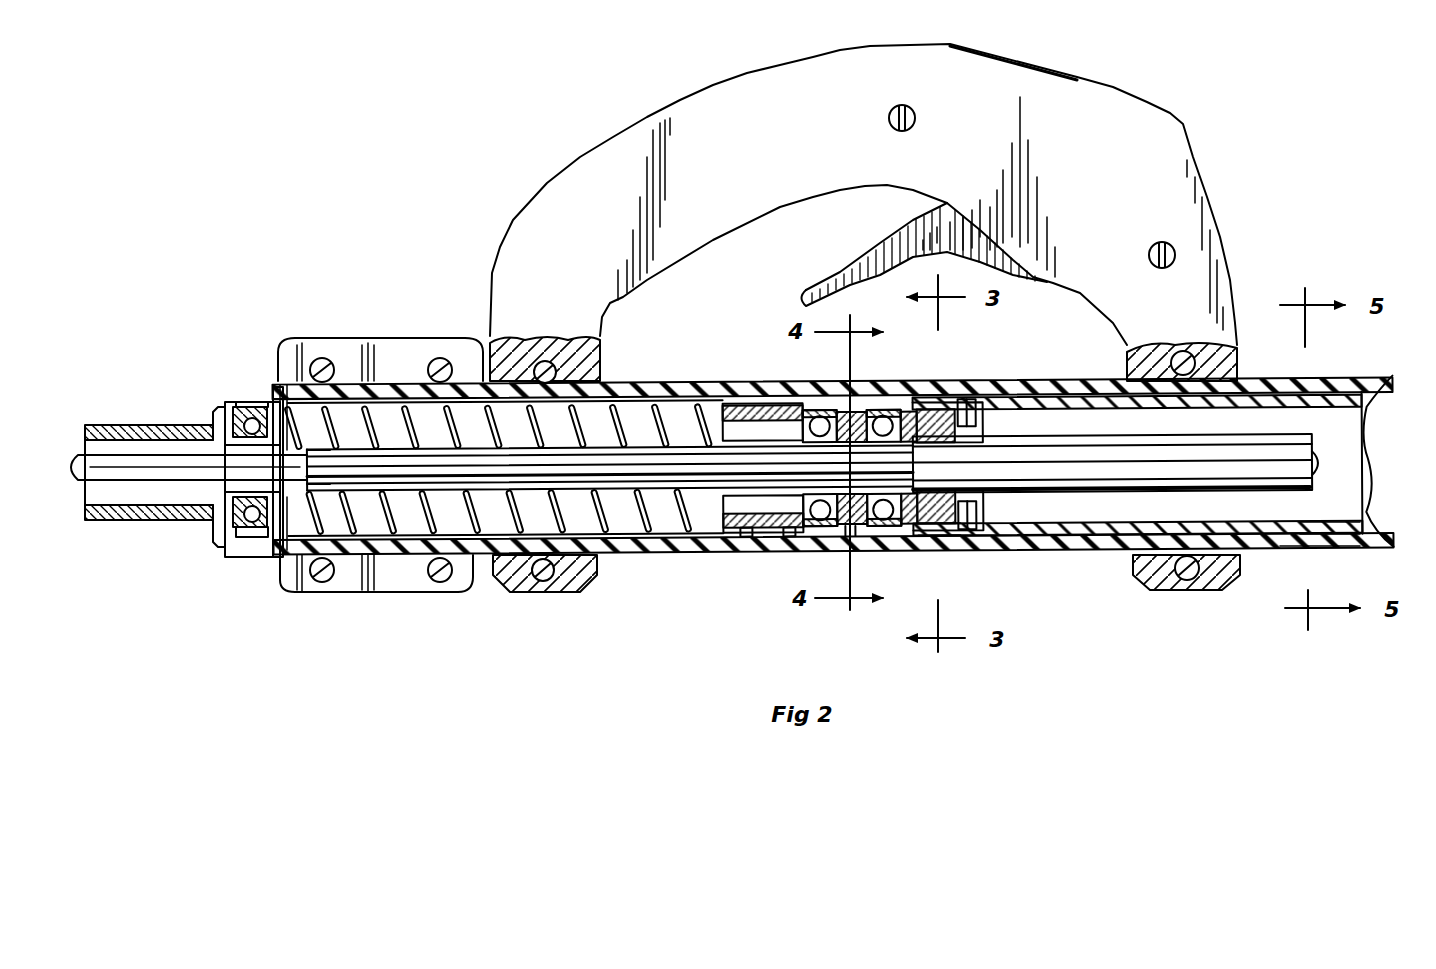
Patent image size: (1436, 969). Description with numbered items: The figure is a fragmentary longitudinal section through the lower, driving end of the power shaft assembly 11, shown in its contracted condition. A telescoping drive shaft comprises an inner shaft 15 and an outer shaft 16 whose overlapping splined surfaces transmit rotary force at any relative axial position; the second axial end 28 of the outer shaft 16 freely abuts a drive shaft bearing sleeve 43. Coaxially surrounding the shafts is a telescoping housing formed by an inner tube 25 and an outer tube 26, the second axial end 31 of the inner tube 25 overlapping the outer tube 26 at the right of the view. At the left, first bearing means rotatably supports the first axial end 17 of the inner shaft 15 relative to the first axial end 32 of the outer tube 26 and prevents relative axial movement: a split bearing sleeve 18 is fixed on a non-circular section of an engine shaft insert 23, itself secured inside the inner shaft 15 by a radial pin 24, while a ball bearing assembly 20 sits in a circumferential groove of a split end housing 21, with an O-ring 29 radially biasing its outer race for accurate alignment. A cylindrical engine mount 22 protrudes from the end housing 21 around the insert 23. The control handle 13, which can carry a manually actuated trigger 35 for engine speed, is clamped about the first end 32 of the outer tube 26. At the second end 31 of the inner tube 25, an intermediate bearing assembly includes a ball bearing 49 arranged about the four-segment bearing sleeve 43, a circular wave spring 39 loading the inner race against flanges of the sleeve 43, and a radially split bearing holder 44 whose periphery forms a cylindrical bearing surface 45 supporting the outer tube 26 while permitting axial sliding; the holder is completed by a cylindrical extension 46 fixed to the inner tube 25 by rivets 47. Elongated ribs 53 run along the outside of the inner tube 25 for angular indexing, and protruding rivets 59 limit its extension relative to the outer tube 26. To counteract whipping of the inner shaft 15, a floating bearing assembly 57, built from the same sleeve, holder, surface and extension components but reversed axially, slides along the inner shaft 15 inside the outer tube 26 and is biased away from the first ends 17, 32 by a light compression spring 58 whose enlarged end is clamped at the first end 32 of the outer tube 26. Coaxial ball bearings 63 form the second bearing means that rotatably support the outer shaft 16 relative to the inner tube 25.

The shaft assembly 11 is at (576, 667).
The control handle 13 is at (543, 165).
The inner shaft 15 is at (697, 455).
The outer shaft 16 is at (1266, 445).
The first axial end 17 is at (328, 490).
The split bearing sleeve 18 is at (226, 418).
The ball bearing assembly 20 is at (208, 447).
The split end housing 21 is at (241, 541).
The engine mount 22 is at (107, 430).
The engine shaft insert 23 is at (146, 478).
The radial pin 24 is at (343, 438).
The inner tube 25 is at (1310, 524).
The outer tube 26 is at (1298, 540).
The second axial end 28 is at (992, 465).
The O-ring 29 is at (247, 402).
The second axial end 31 is at (937, 410).
The first axial end 32 is at (281, 385).
The trigger 35 is at (888, 250).
The wave spring 39 is at (840, 410).
The drive shaft bearing sleeve 43 is at (915, 410).
The bearing holder 44 is at (890, 403).
The cylindrical bearing surface 45 is at (898, 403).
The cylindrical extension 46 is at (937, 527).
The rivets 47 is at (978, 430).
The ball bearing 49 is at (890, 537).
The ribs 53 is at (1347, 522).
The floating bearing assembly 57 is at (752, 540).
The light compression spring 58 is at (605, 553).
The protruding rivets 59 is at (1316, 466).
The ball bearings 63 is at (800, 513).